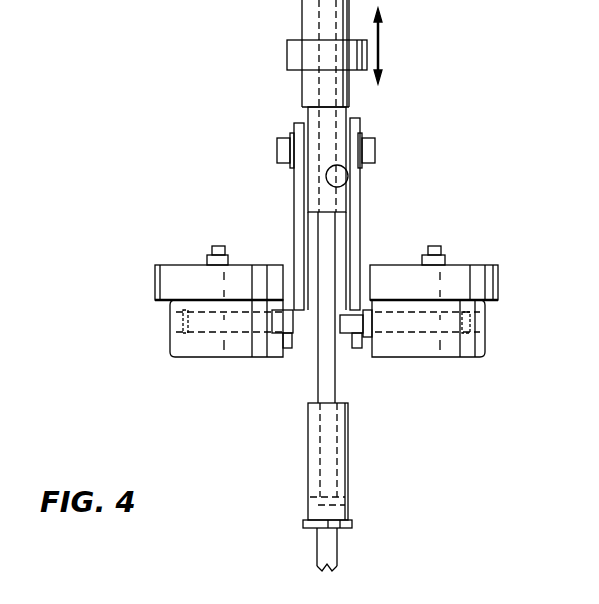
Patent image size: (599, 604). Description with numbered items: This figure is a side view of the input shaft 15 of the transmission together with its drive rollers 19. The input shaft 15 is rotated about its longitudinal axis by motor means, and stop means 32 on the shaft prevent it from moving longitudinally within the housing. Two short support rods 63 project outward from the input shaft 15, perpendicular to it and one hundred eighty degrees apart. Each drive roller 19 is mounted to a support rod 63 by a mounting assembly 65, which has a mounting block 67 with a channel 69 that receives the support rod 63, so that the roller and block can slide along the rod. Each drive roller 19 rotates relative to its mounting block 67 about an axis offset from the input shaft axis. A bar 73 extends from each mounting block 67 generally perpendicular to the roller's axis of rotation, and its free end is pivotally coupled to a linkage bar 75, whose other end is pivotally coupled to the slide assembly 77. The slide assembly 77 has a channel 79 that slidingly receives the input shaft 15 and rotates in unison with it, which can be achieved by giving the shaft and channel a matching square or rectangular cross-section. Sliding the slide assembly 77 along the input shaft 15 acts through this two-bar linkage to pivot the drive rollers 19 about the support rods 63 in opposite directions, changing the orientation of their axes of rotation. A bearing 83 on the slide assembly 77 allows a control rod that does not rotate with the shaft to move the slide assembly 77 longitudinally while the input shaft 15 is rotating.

The input shaft 15 is at (338, 397).
The drive roller 19 is at (156, 284).
The stop means 32 is at (306, 452).
The support rod 63 is at (185, 328).
The mounting assembly 65 is at (180, 368).
The mounting block 67 is at (222, 358).
The channel 69 is at (174, 319).
The bar 73 is at (290, 349).
The linkage bar 75 is at (297, 188).
The slide assembly 77 is at (350, 88).
The channel 79 is at (352, 190).
The bearing 83 is at (287, 53).